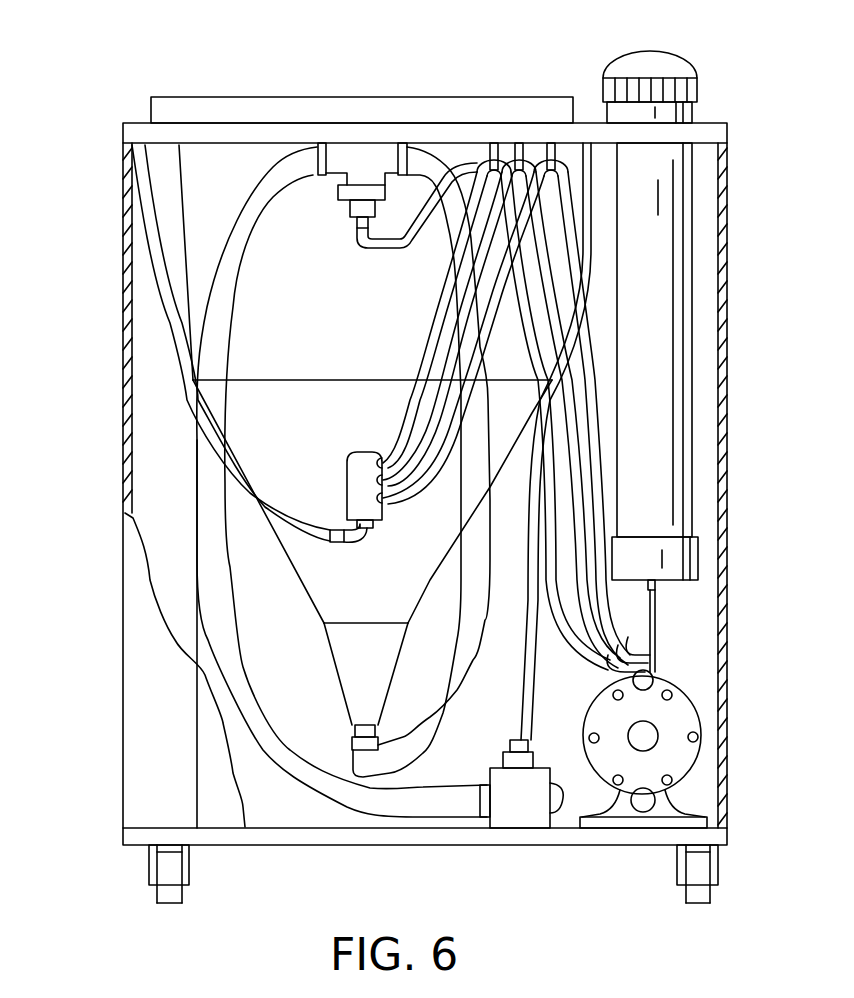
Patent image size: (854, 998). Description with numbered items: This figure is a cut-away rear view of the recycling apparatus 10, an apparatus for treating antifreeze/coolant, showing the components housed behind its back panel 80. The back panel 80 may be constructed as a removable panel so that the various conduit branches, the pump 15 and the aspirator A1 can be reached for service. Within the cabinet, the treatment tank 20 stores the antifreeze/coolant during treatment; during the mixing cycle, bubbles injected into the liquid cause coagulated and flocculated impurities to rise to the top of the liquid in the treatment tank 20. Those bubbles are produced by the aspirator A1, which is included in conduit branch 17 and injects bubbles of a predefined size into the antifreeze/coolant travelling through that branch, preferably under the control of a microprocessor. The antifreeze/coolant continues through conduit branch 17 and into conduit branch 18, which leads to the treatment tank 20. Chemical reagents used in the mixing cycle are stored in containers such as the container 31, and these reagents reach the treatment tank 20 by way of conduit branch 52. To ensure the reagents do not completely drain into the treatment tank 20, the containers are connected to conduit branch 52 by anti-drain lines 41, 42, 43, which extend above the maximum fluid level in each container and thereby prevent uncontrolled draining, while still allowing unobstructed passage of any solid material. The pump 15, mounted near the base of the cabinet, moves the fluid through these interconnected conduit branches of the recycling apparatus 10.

The recycling apparatus 10 is at (92, 408).
The pump 15 is at (690, 717).
The conduit branch 17 is at (240, 262).
The conduit branch 18 is at (467, 687).
The treatment tank 20 is at (330, 366).
The container 31 is at (672, 62).
The anti-drain line 41 is at (403, 498).
The anti-drain line 42 is at (410, 442).
The anti-drain line 43 is at (414, 350).
The conduit branch 52 is at (277, 517).
The back panel 80 is at (137, 745).
The aspirator A1 is at (366, 150).